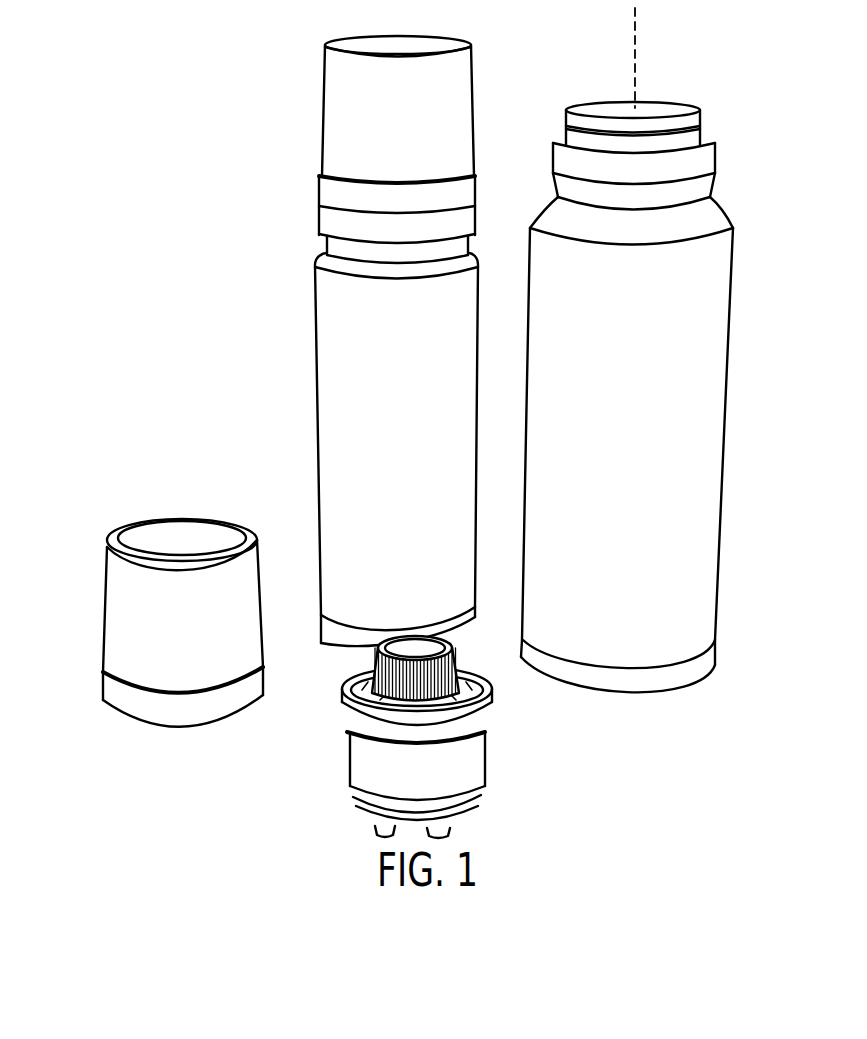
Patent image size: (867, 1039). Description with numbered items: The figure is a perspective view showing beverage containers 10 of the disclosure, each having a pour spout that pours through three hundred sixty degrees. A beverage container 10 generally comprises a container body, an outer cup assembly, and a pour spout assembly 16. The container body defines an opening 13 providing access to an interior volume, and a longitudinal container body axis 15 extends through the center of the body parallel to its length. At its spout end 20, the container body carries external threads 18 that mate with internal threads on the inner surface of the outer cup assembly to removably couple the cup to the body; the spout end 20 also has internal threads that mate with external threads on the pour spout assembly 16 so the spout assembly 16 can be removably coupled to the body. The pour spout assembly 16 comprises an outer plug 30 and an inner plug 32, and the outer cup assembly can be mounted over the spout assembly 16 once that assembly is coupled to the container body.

The beverage container 10 is at (220, 337).
The opening 13 is at (618, 109).
The longitudinal container body axis 15 is at (637, 40).
The pour spout assembly 16 is at (503, 732).
The external threads 18 is at (700, 133).
The spout end 20 is at (673, 100).
The outer plug 30 is at (366, 760).
The inner plug 32 is at (380, 655).